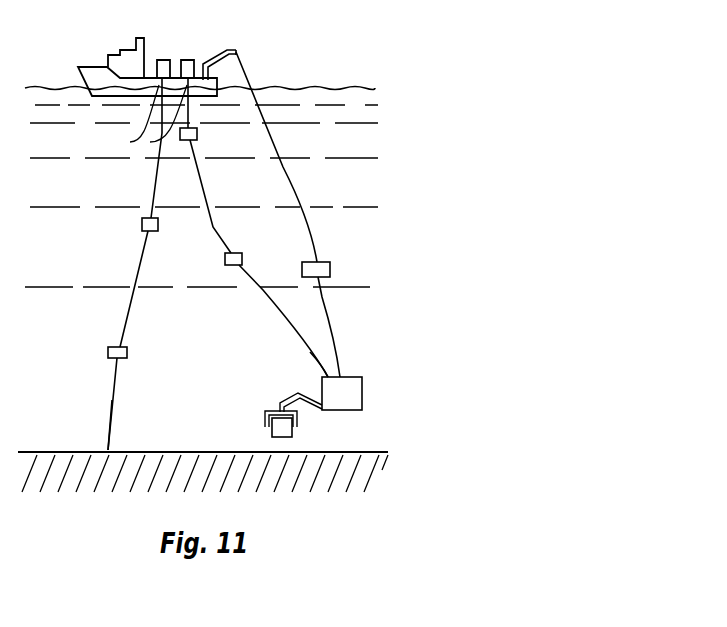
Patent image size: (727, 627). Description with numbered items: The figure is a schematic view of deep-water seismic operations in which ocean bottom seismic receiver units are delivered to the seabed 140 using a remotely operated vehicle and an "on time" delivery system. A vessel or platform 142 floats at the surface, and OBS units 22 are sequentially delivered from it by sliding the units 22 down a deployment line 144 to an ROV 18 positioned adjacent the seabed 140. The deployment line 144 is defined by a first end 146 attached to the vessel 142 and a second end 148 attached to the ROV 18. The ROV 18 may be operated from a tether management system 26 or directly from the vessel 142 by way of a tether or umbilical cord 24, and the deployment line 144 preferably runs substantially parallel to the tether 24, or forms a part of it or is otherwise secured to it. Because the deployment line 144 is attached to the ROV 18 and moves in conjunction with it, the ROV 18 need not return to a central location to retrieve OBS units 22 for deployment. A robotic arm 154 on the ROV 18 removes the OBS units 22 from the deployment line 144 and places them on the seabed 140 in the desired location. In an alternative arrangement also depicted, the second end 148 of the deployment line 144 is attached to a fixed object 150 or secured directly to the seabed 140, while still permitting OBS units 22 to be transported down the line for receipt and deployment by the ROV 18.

The vessel or platform 142 is at (98, 66).
The first end 146 is at (157, 142).
The deployment line 144 is at (137, 258).
The OBS unit 22 is at (197, 134).
The tether or umbilical cord 24 is at (317, 228).
The tether management system 26 is at (330, 268).
The ROV 18 is at (362, 387).
The second end 148 is at (108, 440).
The robotic arm 154 is at (283, 400).
The fixed object 150 is at (108, 448).
The seabed 140 is at (203, 450).